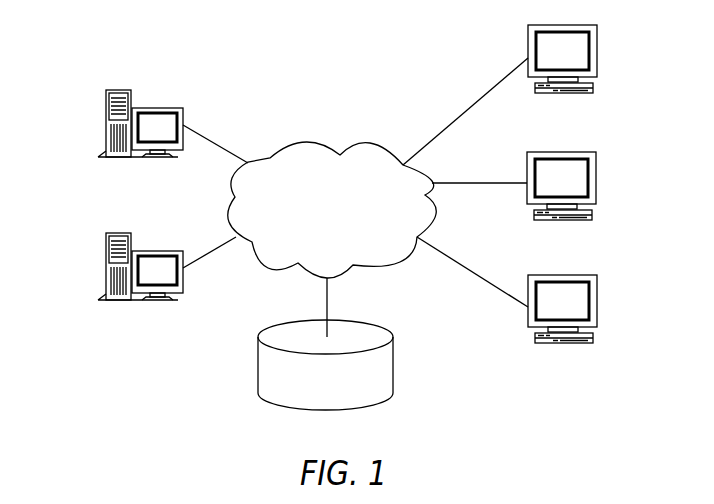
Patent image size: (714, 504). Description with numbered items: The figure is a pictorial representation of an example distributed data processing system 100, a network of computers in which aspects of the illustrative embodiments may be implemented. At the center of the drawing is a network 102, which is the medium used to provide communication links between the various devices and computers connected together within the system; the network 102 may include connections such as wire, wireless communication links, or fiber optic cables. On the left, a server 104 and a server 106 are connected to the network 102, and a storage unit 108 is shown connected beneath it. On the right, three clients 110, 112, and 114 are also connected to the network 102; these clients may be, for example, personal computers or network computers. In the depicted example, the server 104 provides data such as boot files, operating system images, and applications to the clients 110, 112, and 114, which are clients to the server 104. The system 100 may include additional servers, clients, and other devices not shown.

The distributed data processing system 100 is at (404, 60).
The network 102 is at (313, 140).
The server 104 is at (107, 125).
The server 106 is at (107, 268).
The storage unit 108 is at (258, 366).
The client 110 is at (598, 58).
The client 112 is at (596, 183).
The client 114 is at (597, 310).